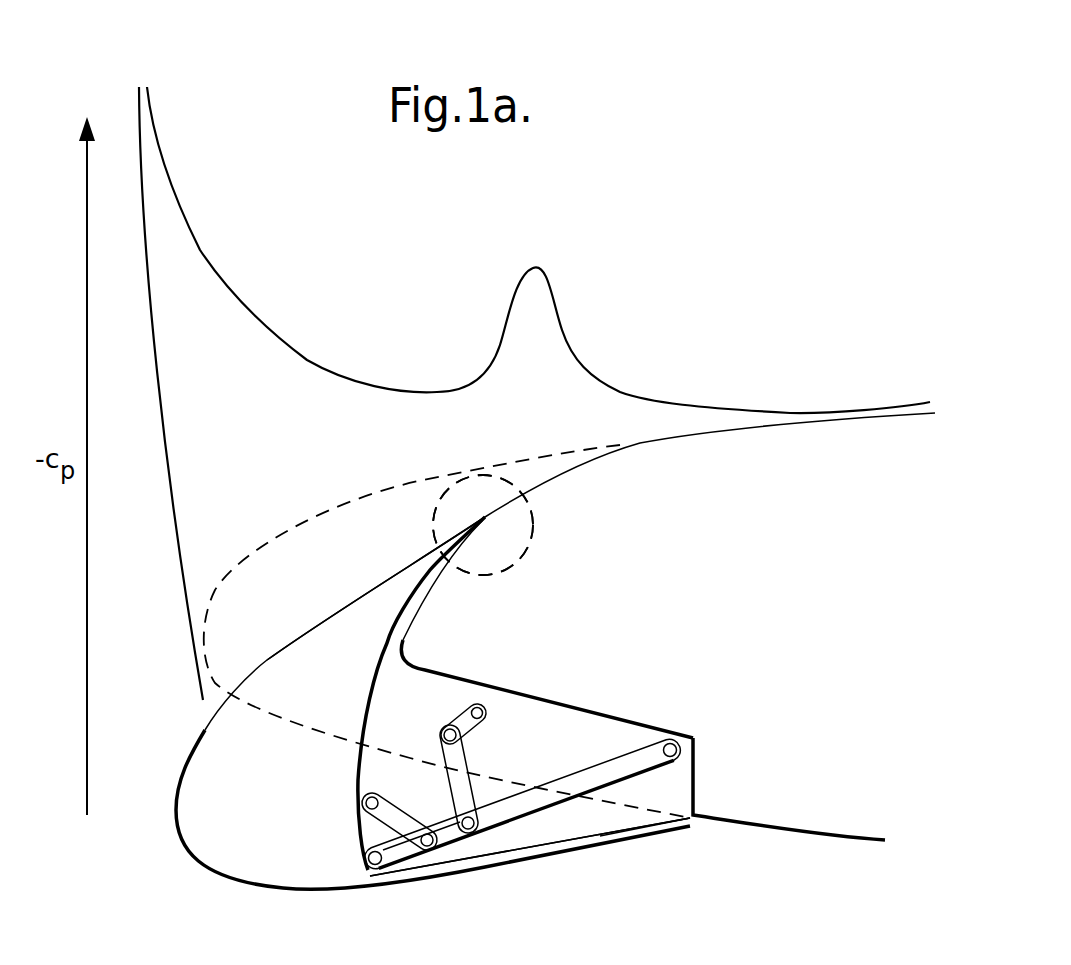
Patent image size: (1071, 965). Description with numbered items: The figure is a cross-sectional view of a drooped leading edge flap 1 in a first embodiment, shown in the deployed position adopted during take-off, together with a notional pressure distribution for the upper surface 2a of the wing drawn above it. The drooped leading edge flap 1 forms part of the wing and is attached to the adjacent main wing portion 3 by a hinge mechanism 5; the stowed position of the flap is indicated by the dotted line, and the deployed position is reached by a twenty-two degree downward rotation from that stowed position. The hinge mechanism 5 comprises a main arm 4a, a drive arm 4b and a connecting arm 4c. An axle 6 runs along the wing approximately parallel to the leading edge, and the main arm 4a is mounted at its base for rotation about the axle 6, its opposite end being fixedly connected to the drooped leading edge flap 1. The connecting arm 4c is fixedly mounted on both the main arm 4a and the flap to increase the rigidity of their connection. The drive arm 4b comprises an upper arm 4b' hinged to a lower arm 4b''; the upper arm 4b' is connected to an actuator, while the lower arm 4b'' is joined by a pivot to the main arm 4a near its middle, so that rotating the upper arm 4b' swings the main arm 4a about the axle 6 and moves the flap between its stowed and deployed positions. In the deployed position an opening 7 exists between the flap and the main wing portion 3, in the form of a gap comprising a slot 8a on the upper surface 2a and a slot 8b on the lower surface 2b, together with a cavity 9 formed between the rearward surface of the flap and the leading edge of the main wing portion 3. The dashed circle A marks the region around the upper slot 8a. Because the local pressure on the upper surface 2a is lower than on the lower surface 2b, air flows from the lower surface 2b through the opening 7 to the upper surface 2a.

The drooped leading edge flap 1 is at (252, 867).
The upper surface 2a is at (797, 432).
The lower surface 2b is at (704, 825).
The main wing portion 3 is at (718, 605).
The main arm 4a is at (590, 776).
The drive arm 4b is at (463, 754).
The upper arm 4b' is at (445, 709).
The lower arm 4b'' is at (430, 779).
The connecting arm 4c is at (398, 831).
The hinge mechanism 5 is at (455, 832).
The axle 6 is at (674, 745).
The opening 7 is at (437, 560).
The slot 8a is at (485, 517).
The slot 8b is at (678, 826).
The cavity 9 is at (566, 843).
The detail circle A is at (533, 550).